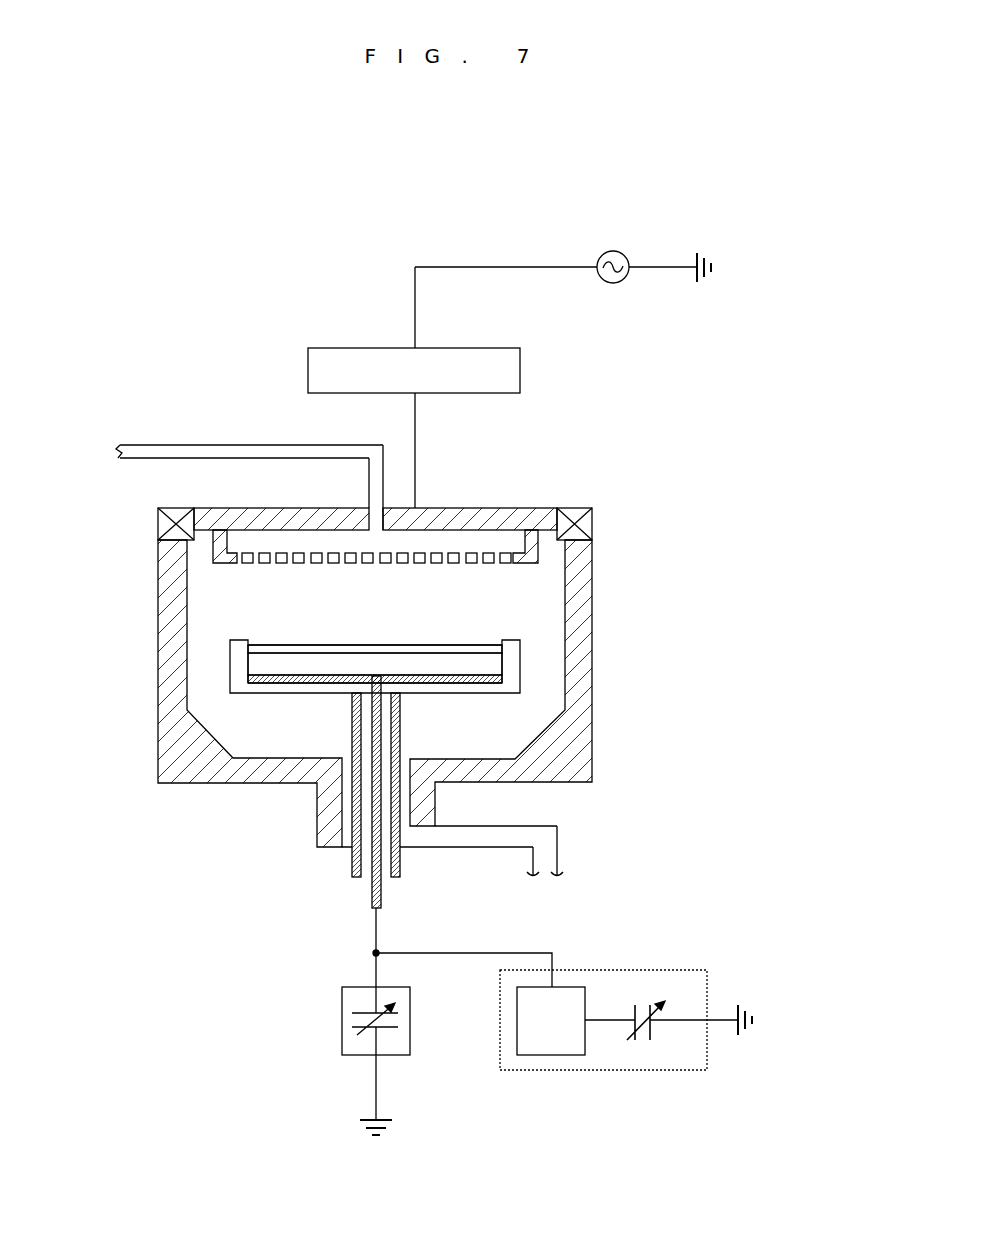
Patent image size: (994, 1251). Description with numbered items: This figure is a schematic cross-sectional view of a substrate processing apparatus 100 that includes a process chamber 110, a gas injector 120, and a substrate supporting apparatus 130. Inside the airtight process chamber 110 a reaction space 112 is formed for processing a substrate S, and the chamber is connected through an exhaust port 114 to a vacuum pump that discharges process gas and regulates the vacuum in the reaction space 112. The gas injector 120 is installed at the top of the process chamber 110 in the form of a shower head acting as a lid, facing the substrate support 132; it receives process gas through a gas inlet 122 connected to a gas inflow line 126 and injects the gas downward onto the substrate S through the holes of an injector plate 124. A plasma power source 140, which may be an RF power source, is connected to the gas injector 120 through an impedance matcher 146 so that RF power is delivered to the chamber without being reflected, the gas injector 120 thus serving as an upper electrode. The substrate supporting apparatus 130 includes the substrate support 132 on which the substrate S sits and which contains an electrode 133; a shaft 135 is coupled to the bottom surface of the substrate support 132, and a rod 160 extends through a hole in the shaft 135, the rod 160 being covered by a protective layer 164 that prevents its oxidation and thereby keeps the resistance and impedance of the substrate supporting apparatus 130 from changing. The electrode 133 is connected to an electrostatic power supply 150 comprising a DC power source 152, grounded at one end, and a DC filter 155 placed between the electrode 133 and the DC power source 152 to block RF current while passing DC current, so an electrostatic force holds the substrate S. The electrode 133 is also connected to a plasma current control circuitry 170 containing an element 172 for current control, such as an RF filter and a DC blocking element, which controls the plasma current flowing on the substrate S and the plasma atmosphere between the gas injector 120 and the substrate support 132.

The substrate processing apparatus 100 is at (696, 180).
The process chamber 110 is at (581, 605).
The reaction space 112 is at (220, 590).
The exhaust port 114 is at (558, 857).
The gas injector 120 is at (503, 512).
The gas inlet 122 is at (385, 497).
The injector plate 124 is at (526, 563).
The gas inflow line 126 is at (212, 445).
The substrate supporting apparatus 130 is at (478, 708).
The substrate S is at (473, 642).
The substrate support 132 is at (508, 666).
The electrode 133 is at (473, 681).
The shaft 135 is at (400, 834).
The plasma power source 140 is at (615, 250).
The impedance matcher 146 is at (521, 373).
The electrostatic power supply 150 is at (626, 1054).
The DC power source 152 is at (641, 1045).
The DC filter 155 is at (551, 1057).
The rod 160 is at (370, 780).
The protective layer 164 is at (366, 822).
The plasma current control circuitry 170 is at (411, 1020).
The element for current control 172 is at (381, 1035).